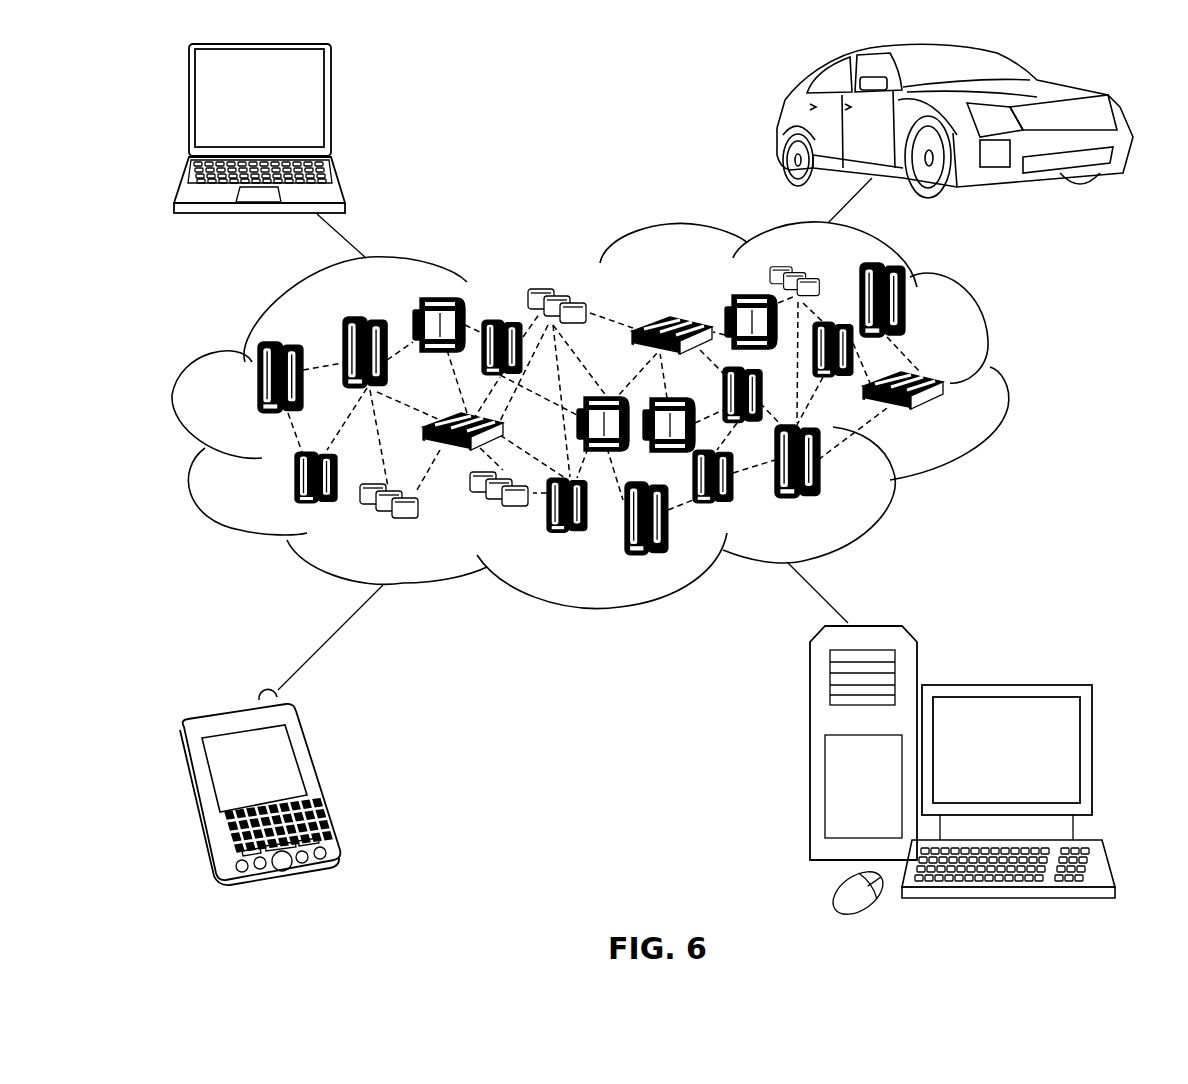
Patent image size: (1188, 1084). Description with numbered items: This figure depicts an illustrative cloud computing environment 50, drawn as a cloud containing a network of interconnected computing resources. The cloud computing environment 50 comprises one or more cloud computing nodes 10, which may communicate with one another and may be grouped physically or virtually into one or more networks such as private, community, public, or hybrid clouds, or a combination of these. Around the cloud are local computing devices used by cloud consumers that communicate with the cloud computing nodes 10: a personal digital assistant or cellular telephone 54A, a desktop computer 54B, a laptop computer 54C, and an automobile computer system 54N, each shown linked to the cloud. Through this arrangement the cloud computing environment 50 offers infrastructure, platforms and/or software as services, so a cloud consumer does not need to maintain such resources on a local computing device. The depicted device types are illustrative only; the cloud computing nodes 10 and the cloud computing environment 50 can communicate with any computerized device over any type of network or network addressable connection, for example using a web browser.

The laptop computer 54C is at (332, 108).
The automobile computer system 54N is at (782, 120).
The personal digital assistant or cellular telephone 54A is at (322, 780).
The desktop computer 54B is at (1003, 683).
The cloud computing environment 50 is at (1007, 387).
The cloud computing node 10 is at (948, 422).